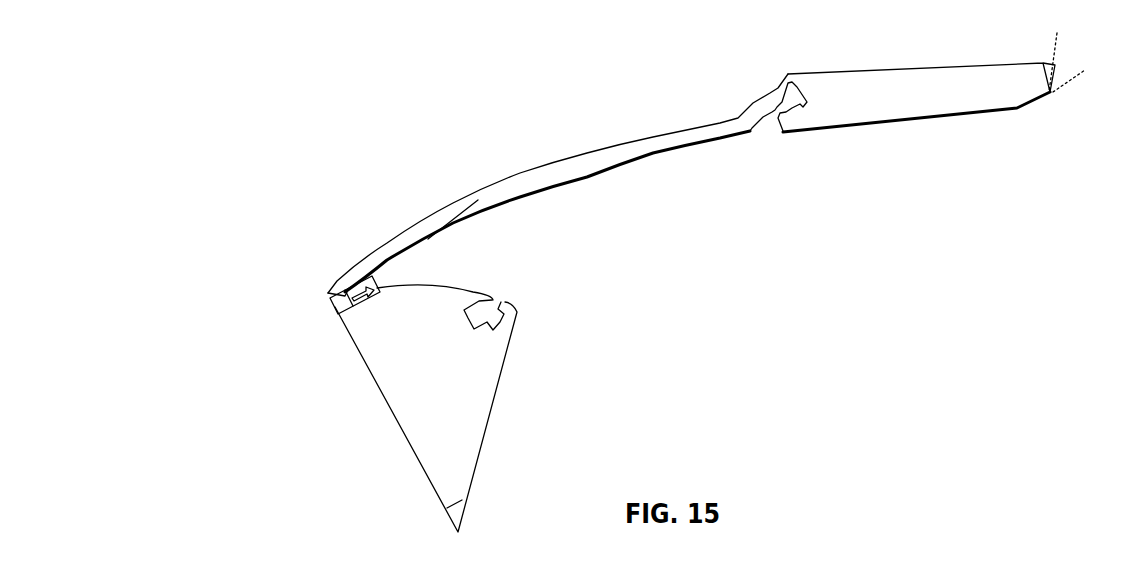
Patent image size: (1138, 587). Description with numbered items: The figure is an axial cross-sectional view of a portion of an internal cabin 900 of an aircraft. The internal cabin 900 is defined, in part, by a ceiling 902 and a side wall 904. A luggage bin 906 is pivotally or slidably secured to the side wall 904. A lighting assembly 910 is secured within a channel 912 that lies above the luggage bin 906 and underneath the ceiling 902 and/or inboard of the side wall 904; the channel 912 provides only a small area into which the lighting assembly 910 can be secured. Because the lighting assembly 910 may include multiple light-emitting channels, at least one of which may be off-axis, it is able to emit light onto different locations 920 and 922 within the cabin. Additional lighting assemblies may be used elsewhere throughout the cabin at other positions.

The internal cabin 900 is at (750, 288).
The ceiling 902 is at (922, 66).
The side wall 904 is at (347, 272).
The luggage bin 906 is at (499, 373).
The lighting assembly 910 is at (331, 303).
The channel 912 is at (372, 277).
The location 920 is at (589, 188).
The location 922 is at (914, 121).